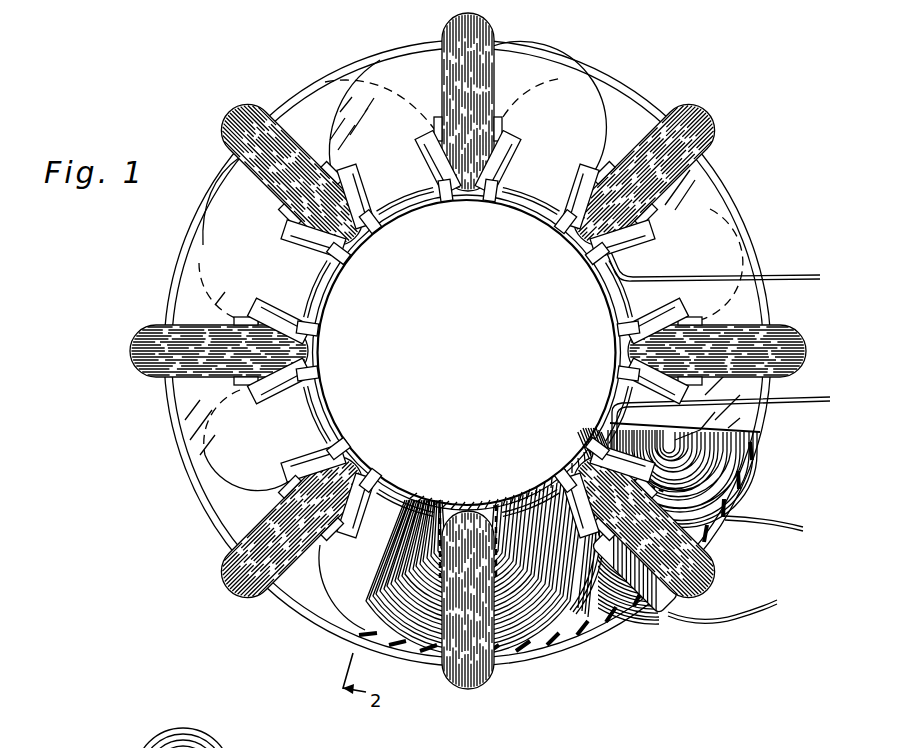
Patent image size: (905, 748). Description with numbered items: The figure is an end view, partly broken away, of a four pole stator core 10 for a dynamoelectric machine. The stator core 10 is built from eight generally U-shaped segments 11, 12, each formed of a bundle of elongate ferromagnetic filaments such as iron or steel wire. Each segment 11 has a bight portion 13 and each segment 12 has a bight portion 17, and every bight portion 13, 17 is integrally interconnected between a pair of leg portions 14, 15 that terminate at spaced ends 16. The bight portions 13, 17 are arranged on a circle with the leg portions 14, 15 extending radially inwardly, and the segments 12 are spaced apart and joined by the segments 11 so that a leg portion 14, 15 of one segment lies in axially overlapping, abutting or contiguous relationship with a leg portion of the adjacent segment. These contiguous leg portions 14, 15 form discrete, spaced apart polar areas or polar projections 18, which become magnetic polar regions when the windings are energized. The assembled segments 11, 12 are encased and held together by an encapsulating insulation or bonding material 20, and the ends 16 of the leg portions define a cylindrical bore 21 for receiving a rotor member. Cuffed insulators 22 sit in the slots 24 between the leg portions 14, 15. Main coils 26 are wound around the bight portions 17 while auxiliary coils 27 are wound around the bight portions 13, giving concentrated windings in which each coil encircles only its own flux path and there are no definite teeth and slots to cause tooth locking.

The stator core 10 is at (724, 136).
The segment 11 is at (637, 577).
The segment 12 is at (428, 632).
The bight portion 13 is at (724, 490).
The leg portion 14 is at (452, 498).
The leg portion 15 is at (543, 485).
The end 16 is at (430, 492).
The bight portion 17 is at (538, 632).
The polar area 18 is at (348, 421).
The encapsulating insulation or bonding material 20 is at (745, 235).
The cylindrical bore 21 is at (483, 309).
The cuffed insulator 22 is at (282, 497).
The slot 24 is at (346, 533).
The main coil 26 is at (130, 347).
The auxiliary coil 27 is at (238, 600).